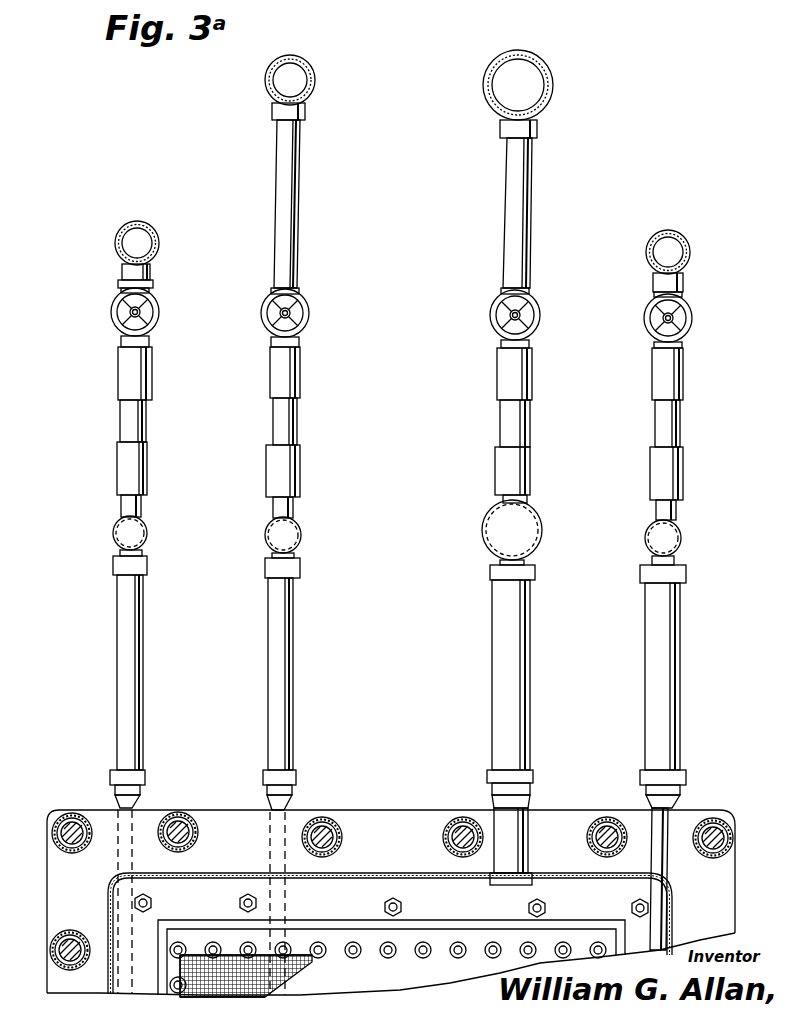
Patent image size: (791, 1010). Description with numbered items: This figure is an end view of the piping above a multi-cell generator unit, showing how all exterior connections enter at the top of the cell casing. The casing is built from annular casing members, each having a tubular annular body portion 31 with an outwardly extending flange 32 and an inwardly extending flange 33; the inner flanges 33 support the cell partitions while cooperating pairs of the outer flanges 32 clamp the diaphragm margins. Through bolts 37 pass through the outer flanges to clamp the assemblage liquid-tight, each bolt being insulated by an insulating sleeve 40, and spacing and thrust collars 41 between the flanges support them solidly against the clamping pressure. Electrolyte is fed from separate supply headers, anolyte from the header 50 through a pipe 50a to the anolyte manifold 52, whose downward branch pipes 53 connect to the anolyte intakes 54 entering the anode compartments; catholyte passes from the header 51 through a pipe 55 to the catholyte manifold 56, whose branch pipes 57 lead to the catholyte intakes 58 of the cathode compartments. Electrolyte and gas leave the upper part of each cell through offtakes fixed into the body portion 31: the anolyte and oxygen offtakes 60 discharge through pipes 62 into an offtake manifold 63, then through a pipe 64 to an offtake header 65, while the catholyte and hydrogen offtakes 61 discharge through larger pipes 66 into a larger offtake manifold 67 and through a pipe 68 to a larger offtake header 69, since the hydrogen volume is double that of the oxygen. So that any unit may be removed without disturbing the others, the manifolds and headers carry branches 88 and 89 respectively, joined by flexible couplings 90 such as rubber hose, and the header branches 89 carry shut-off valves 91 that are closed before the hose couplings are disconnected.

The annular body portion 31 is at (383, 872).
The outwardly extending flange 32 is at (395, 820).
The inwardly extending flange 33 is at (385, 906).
The through bolt 37 is at (185, 824).
The insulating sleeve 40 is at (55, 832).
The spacing and thrust collar 41 is at (52, 955).
The anolyte supply header 50 is at (156, 245).
The anolyte pipe 50a is at (118, 283).
The catholyte supply header 51 is at (688, 250).
The anolyte manifold 52 is at (137, 537).
The anolyte branch pipe 53 is at (140, 662).
The anolyte intake 54 is at (118, 802).
The catholyte pipe 55 is at (690, 334).
The catholyte manifold 56 is at (682, 539).
The catholyte branch pipe 57 is at (680, 650).
The catholyte intake 58 is at (672, 806).
The anolyte and oxygen offtake 60 is at (290, 806).
The catholyte and hydrogen offtake 61 is at (530, 802).
The anolyte offtake pipe 62 is at (286, 654).
The anolyte offtake manifold 63 is at (290, 538).
The anolyte offtake pipe to header 64 is at (309, 312).
The anolyte offtake header 65 is at (310, 72).
The catholyte offtake pipe 66 is at (530, 650).
The catholyte offtake manifold 67 is at (532, 533).
The catholyte offtake pipe to header 68 is at (530, 486).
The catholyte offtake header 69 is at (553, 72).
The manifold branch 88 is at (142, 508).
The header branch 89 is at (153, 284).
The flexible coupling 90 is at (272, 368).
The shut-off valve 91 is at (160, 313).